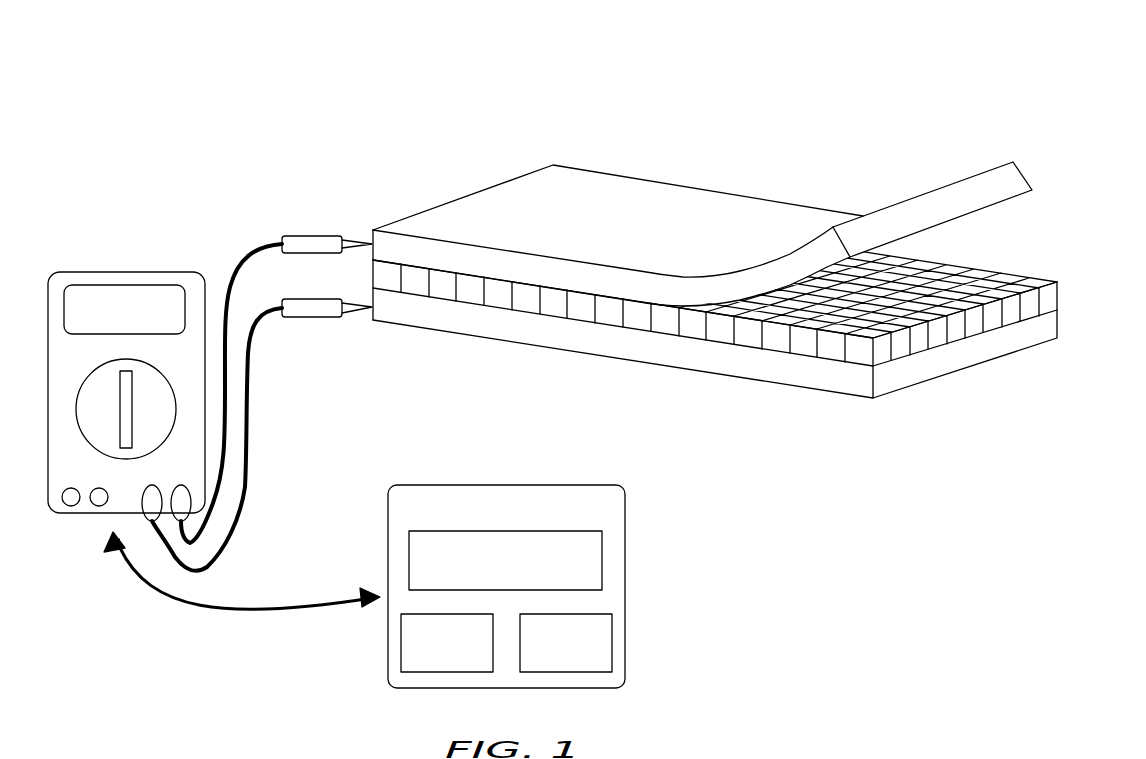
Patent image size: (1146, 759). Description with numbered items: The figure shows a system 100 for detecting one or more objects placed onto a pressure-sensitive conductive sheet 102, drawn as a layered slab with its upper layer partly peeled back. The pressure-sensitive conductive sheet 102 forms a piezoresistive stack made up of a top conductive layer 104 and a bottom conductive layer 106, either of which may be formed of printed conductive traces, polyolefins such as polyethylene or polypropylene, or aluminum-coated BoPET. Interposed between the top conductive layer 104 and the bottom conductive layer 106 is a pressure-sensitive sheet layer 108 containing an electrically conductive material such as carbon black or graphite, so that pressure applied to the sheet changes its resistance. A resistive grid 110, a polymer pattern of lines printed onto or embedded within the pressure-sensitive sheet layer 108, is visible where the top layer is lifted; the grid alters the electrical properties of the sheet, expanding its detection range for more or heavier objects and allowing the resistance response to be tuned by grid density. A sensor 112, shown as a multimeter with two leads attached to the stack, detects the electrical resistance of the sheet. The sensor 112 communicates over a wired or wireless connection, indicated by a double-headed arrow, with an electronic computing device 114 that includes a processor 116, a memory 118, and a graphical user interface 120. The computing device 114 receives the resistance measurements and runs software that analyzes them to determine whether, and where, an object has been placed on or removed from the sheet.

The system 100 is at (330, 78).
The pressure-sensitive conductive sheet 102 is at (689, 171).
The top conductive layer 104 is at (481, 192).
The bottom conductive layer 106 is at (523, 332).
The pressure-sensitive sheet layer 108 is at (1048, 299).
The resistive grid 110 is at (985, 282).
The sensor 112 is at (93, 272).
The electronic computing device 114 is at (551, 503).
The processor 116 is at (400, 645).
The memory 118 is at (613, 643).
The graphical user interface 120 is at (602, 560).